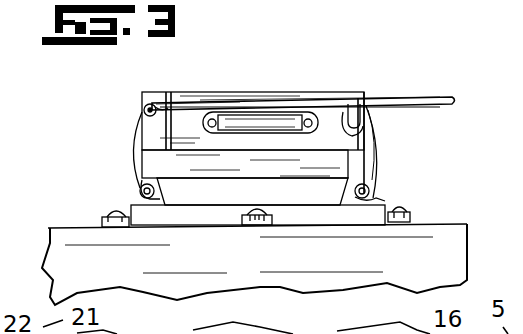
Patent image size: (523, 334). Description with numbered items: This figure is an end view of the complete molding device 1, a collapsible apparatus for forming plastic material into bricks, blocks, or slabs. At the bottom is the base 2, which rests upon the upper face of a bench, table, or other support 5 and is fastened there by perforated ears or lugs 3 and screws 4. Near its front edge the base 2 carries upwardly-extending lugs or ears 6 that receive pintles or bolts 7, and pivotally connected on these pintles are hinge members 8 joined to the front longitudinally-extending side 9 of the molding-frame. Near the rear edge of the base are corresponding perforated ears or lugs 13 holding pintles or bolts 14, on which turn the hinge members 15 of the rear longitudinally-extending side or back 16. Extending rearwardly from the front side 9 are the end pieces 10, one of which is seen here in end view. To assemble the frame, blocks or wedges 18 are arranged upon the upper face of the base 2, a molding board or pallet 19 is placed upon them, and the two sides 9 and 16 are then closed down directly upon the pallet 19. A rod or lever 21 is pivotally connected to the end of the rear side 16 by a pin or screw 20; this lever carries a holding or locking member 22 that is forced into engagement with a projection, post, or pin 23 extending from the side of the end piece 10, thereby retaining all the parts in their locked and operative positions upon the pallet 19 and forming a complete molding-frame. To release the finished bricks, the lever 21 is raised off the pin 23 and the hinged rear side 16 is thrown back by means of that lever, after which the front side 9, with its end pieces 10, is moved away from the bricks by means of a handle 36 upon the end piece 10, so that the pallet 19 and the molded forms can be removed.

The molding device 1 is at (253, 123).
The base 2 is at (158, 218).
The perforated ears or lugs 3 is at (100, 221).
The screws 4 is at (108, 212).
The support 5 is at (55, 248).
The upwardly-extending lugs or ears 6 is at (388, 209).
The pintles or bolts 7 is at (372, 193).
The hinge members 8 is at (376, 158).
The front side 9 is at (368, 94).
The end pieces 10 is at (322, 99).
The perforated ears or lugs 13 is at (141, 201).
The pintles or bolts 14 is at (140, 189).
The hinge members 15 is at (138, 149).
The rear side 16 is at (151, 102).
The blocks or wedges 18 is at (200, 197).
The molding board or pallet 19 is at (230, 170).
The pins or screws 20 is at (144, 109).
The rods or levers 21 is at (199, 104).
The holding or locking member 22 is at (362, 117).
The projection, post, or pin 23 is at (373, 141).
The handles 36 is at (272, 117).